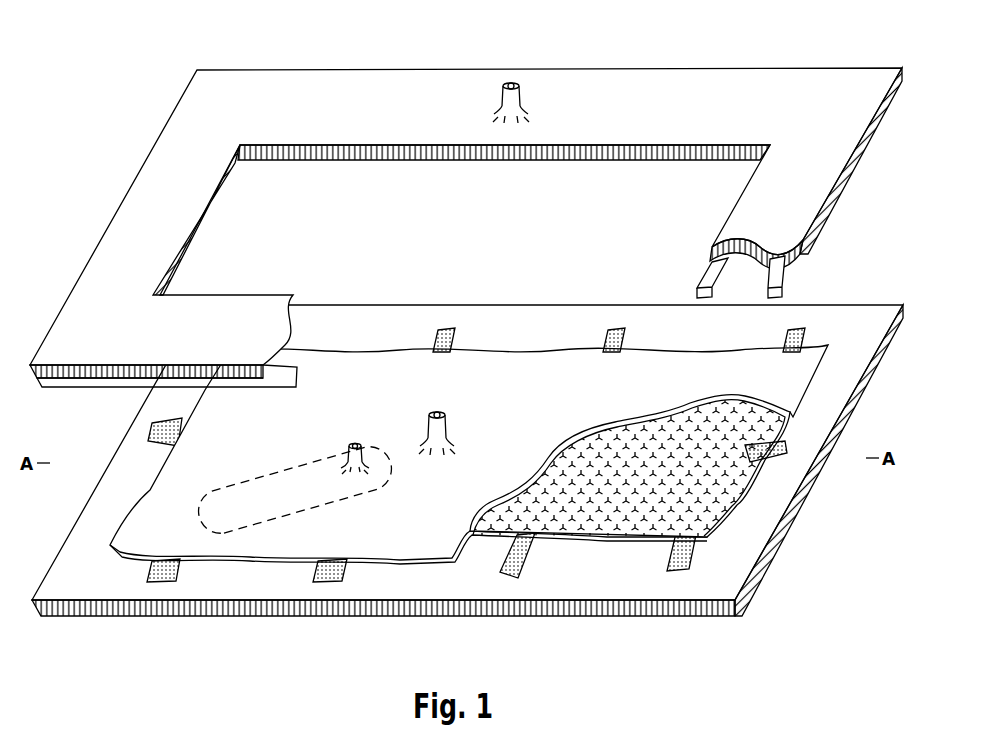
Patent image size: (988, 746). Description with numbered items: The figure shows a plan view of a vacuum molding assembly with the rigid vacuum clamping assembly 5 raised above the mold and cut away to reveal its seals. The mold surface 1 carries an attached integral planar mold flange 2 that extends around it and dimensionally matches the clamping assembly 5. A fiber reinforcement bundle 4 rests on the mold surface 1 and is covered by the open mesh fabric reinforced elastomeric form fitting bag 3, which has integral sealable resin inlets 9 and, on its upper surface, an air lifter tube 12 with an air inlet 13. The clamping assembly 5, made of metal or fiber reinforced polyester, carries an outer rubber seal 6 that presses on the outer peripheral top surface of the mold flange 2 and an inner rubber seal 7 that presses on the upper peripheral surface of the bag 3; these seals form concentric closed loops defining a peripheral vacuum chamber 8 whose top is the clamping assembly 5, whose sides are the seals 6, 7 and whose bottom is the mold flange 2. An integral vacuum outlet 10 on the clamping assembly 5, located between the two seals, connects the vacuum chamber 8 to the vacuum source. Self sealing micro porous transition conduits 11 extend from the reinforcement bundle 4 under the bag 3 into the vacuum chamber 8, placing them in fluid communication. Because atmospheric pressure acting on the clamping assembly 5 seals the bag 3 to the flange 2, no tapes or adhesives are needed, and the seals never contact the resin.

The mold surface 1 is at (657, 494).
The integral planar mold flange 2 is at (744, 548).
The open mesh fabric reinforced elastomeric form fitting bag 3 is at (772, 378).
The fiber reinforcement bundle 4 is at (681, 487).
The rigid vacuum clamping assembly 5 is at (466, 204).
The outer rubber seal 6 is at (697, 281).
The inner rubber seal 7 is at (791, 278).
The peripheral vacuum chamber 8 is at (752, 282).
The sealable resin inlet 9 is at (451, 405).
The integral vacuum outlet 10 is at (523, 78).
The self sealing micro porous transition conduit 11 is at (530, 574).
The air lifter tube 12 is at (300, 495).
The air inlet 13 is at (363, 436).